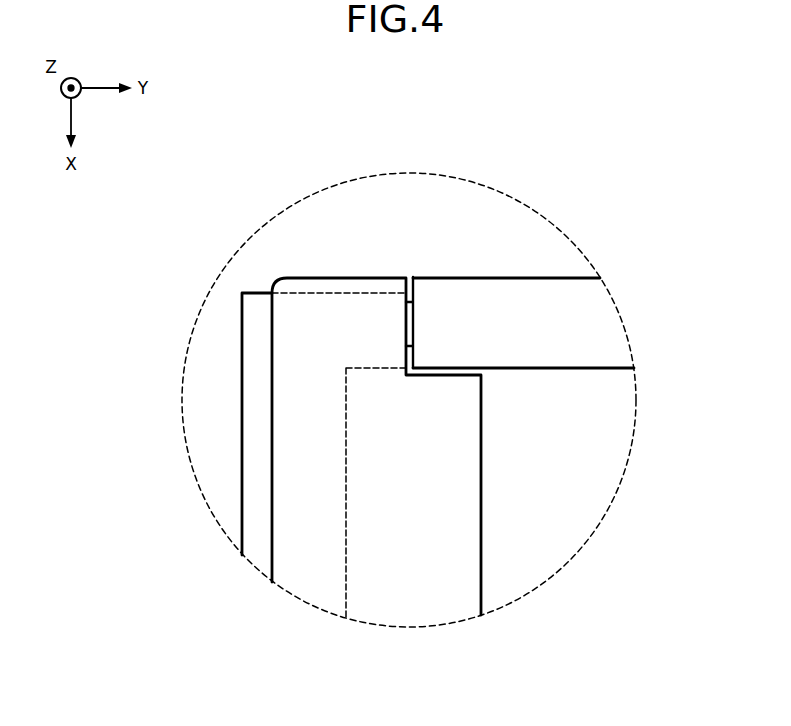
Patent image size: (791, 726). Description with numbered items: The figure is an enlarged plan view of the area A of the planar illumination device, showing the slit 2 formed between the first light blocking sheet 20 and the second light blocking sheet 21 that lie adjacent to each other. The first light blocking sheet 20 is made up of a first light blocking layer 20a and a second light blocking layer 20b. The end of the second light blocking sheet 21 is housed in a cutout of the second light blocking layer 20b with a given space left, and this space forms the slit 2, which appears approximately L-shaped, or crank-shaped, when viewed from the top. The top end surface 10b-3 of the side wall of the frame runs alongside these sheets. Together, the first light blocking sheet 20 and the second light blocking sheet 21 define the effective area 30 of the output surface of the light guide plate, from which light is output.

The slit 2 is at (440, 385).
The first light blocking sheet 20 is at (234, 124).
The first light blocking layer 20a is at (259, 303).
The second light blocking layer 20b is at (375, 385).
The top end surface 10b-3 is at (408, 287).
The second light blocking sheet 21 is at (482, 303).
The effective area 30 is at (616, 458).
The area A is at (533, 210).